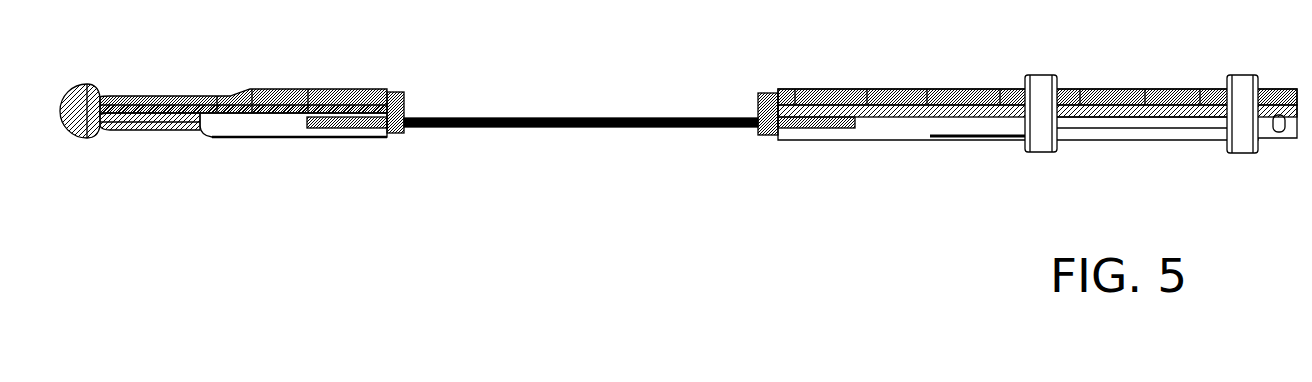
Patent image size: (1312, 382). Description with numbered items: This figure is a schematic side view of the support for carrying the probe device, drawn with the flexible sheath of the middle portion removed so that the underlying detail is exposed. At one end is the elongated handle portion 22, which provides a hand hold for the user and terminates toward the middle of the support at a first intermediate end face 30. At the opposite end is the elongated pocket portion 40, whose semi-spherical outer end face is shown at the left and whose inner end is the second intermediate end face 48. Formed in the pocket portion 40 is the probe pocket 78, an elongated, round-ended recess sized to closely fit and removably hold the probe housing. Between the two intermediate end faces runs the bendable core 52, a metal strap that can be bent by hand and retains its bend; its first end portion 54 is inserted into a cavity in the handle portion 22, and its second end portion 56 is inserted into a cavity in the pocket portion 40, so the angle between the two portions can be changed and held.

The probe pocket 78 is at (176, 97).
The pocket portion 40 is at (257, 140).
The second end portion of the core 56 is at (357, 127).
The second intermediate end face 48 is at (405, 105).
The bendable core 52 is at (550, 120).
The first intermediate end face 30 is at (758, 110).
The handle portion 22 is at (915, 128).
The first end portion of the core 54 is at (815, 128).